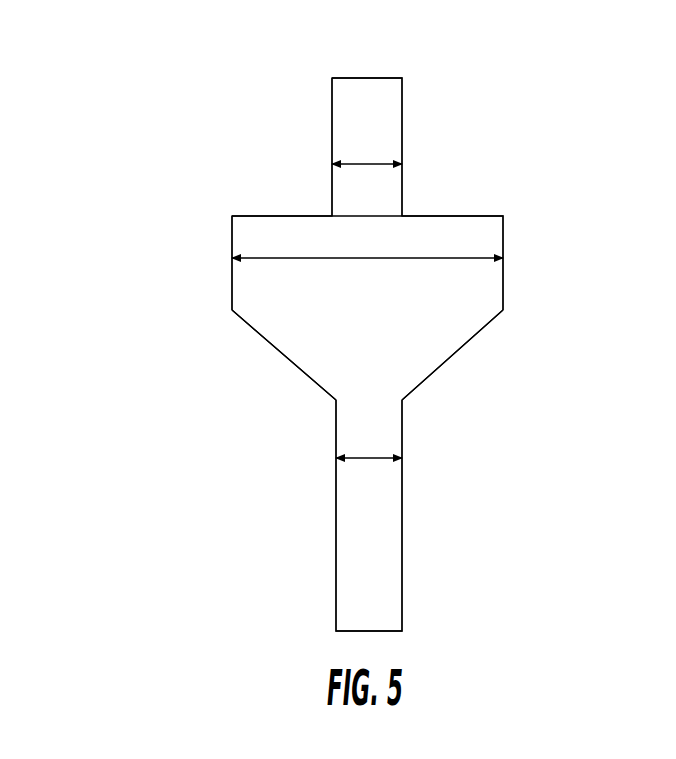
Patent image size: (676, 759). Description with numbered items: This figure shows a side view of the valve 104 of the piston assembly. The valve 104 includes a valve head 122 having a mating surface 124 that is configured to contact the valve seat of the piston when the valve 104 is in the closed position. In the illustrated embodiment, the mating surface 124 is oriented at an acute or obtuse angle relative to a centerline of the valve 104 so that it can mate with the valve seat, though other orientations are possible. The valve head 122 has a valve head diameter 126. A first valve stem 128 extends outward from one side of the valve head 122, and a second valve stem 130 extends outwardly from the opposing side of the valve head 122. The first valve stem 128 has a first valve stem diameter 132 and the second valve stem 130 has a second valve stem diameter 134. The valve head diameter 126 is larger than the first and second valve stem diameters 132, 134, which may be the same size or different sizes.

The valve 104 is at (154, 135).
The valve head 122 is at (470, 216).
The mating surface 124 is at (455, 353).
The valve head diameter 126 is at (295, 258).
The first valve stem 128 is at (336, 518).
The second valve stem 130 is at (402, 128).
The first valve stem diameter 132 is at (363, 459).
The second valve stem diameter 134 is at (366, 164).